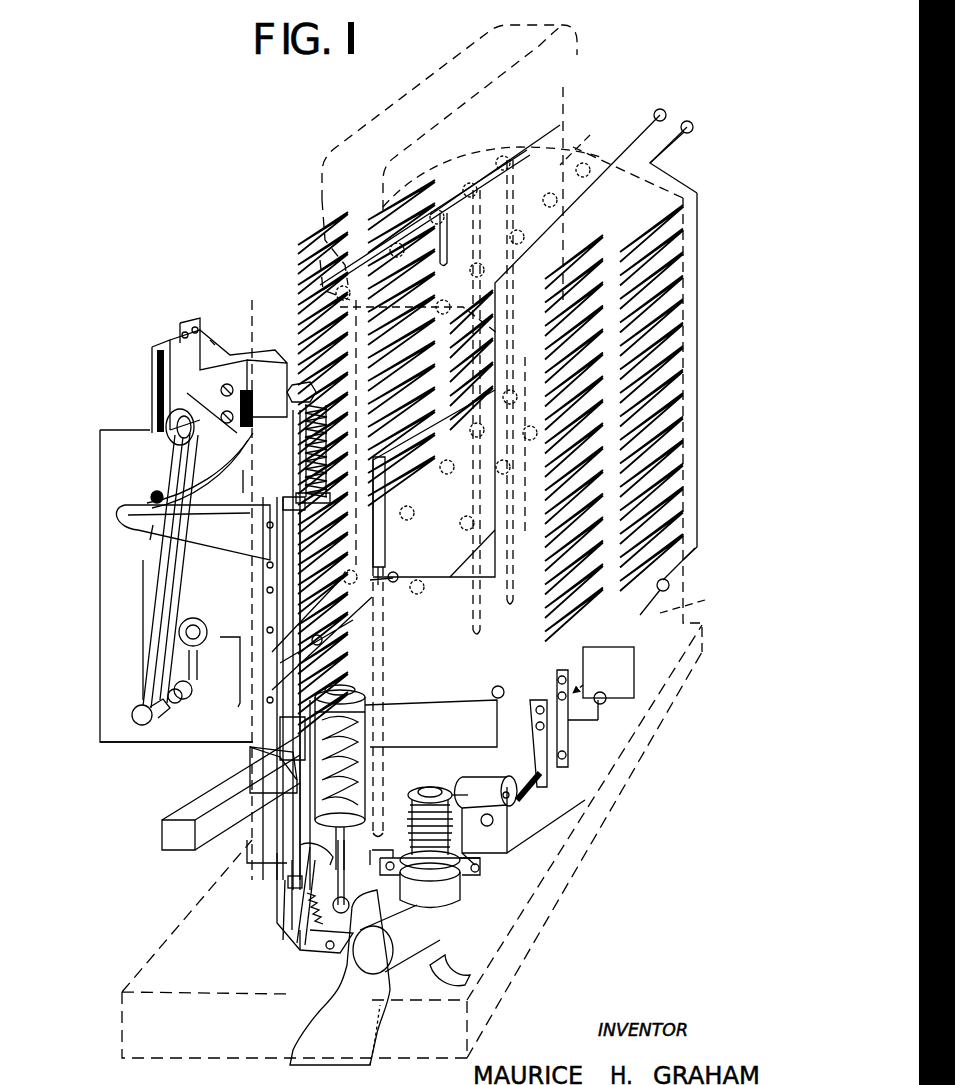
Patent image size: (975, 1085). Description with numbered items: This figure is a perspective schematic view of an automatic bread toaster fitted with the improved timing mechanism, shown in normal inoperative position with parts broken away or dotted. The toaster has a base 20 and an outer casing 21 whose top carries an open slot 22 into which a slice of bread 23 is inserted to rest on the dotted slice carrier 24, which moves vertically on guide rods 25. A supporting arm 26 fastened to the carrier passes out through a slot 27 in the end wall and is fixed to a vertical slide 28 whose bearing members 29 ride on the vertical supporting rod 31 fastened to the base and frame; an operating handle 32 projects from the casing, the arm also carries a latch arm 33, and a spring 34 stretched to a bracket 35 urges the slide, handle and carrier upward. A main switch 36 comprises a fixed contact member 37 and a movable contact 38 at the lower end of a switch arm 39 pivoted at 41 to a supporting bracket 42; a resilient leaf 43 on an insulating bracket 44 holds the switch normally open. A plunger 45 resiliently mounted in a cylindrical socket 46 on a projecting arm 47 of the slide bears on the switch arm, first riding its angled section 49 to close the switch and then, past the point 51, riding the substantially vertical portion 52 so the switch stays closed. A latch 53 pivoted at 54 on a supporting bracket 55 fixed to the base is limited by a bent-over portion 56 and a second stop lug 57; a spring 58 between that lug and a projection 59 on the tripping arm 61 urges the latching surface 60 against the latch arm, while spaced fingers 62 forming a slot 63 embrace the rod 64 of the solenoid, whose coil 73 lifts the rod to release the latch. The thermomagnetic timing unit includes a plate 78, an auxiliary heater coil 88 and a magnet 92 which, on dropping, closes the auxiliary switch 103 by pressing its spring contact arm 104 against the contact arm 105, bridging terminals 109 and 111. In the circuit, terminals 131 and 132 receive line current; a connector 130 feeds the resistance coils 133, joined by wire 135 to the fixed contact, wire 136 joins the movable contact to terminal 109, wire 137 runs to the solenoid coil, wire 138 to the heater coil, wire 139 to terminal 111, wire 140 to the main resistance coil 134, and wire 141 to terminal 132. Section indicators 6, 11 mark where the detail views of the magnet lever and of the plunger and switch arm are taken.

The base 20 is at (618, 770).
The outer casing 21 is at (690, 604).
The open slot 22 is at (590, 136).
The slice of bread 23 is at (582, 42).
The slice carrier 24 is at (452, 458).
The guide rods 25 is at (522, 153).
The supporting arm 26 is at (373, 630).
The slot 27 is at (379, 669).
The vertical slide 28 is at (273, 695).
The bearing members 29 is at (277, 507).
The vertical supporting rod 31 is at (247, 852).
The operating handle 32 is at (197, 800).
The latch arm 33 is at (247, 794).
The spring 34 is at (330, 423).
The bracket 35 is at (157, 397).
The main switch 36 is at (168, 660).
The fixed contact member 37 is at (185, 692).
The movable contact 38 is at (163, 707).
The switch arm 39 is at (83, 703).
The pivot 41 is at (172, 420).
The supporting bracket 42 is at (173, 393).
The resilient leaf 43 is at (220, 447).
The insulating bracket 44 is at (248, 445).
The plunger 45 is at (152, 495).
The cylindrical socket 46 is at (127, 499).
The projecting arm 47 is at (160, 517).
The section of switch arm 49 is at (165, 580).
The point 51 is at (155, 587).
The remaining portion of switch arm 52 is at (143, 628).
The latch 53 is at (290, 920).
The pivot 54 is at (290, 890).
The supporting bracket 55 is at (287, 963).
The bent-over portion 56 is at (297, 908).
The second stop lug 57 is at (307, 950).
The spring 58 is at (317, 967).
The projection 59 is at (330, 953).
The latching surface 60 is at (300, 940).
The tripping arm 61 is at (297, 877).
The spaced fingers 62 is at (300, 855).
The slot 63 is at (345, 866).
The rod 64 is at (349, 902).
The solenoid coil 73 is at (348, 753).
The plate 78 is at (482, 875).
The auxiliary heater coil 88 is at (412, 825).
The magnet 92 is at (442, 903).
The auxiliary switch 103 is at (600, 790).
The spring contact arm 104 is at (533, 747).
The contact arm 105 is at (562, 730).
The terminal 109 is at (497, 687).
The terminal 111 is at (606, 698).
The connector 130 is at (578, 200).
The terminal 131 is at (664, 109).
The terminal 132 is at (692, 123).
The resistance coils 133 is at (326, 258).
The resistance coil 134 is at (653, 261).
The wire 135 is at (223, 637).
The wire 136 is at (165, 742).
The wire 137 is at (450, 703).
The wire 138 is at (392, 850).
The wire 139 is at (563, 779).
The wire 140 is at (634, 668).
The wire 141 is at (698, 446).
The section line 6 is at (368, 977).
The section line 11 is at (287, 233).